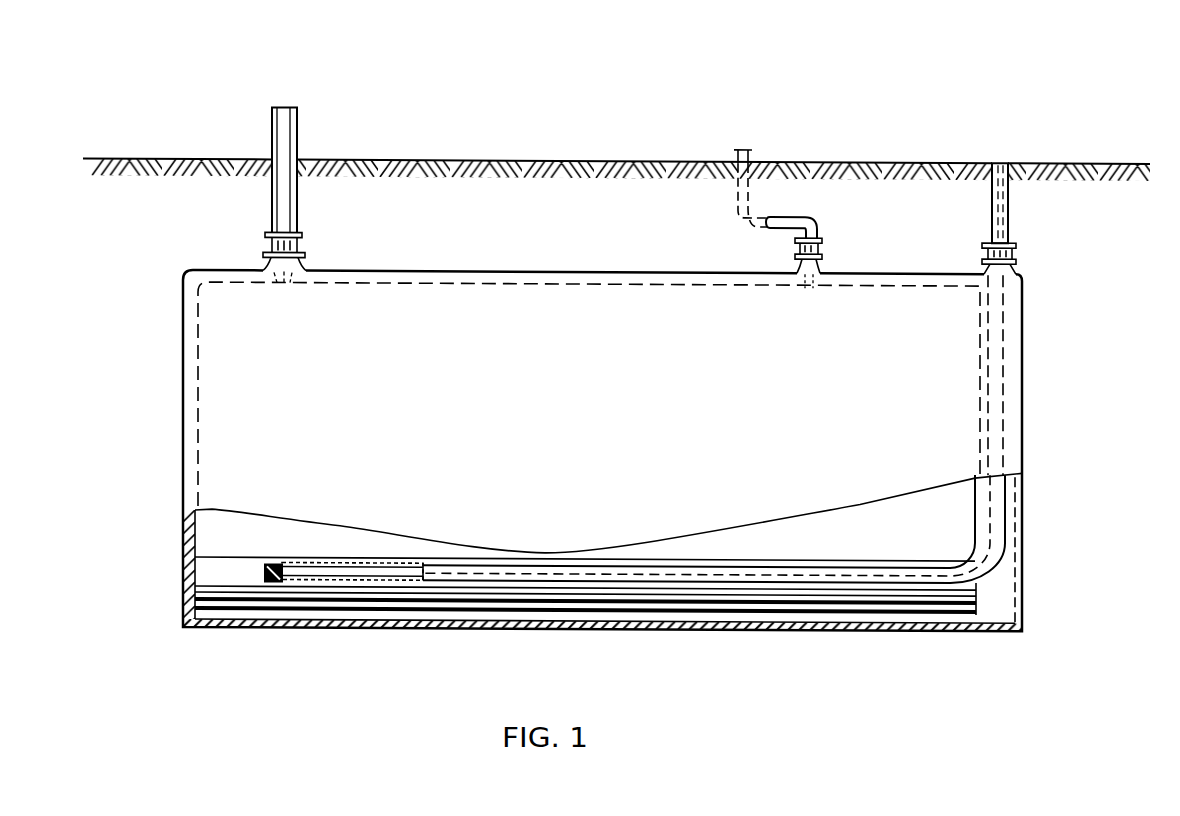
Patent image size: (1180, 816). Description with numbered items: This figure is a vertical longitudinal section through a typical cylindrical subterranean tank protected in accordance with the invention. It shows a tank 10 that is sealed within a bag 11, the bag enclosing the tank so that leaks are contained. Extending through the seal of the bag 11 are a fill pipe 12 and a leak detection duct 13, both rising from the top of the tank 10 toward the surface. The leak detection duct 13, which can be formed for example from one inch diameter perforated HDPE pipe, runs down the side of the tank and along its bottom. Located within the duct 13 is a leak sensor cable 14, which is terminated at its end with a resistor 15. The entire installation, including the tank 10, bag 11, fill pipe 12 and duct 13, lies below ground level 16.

The tank 10 is at (900, 536).
The bag 11 is at (368, 378).
The fill pipe 12 is at (299, 213).
The leak detection duct 13 is at (1009, 211).
The leak sensor cable 14 is at (372, 578).
The resistor 15 is at (271, 580).
The ground level 16 is at (892, 156).